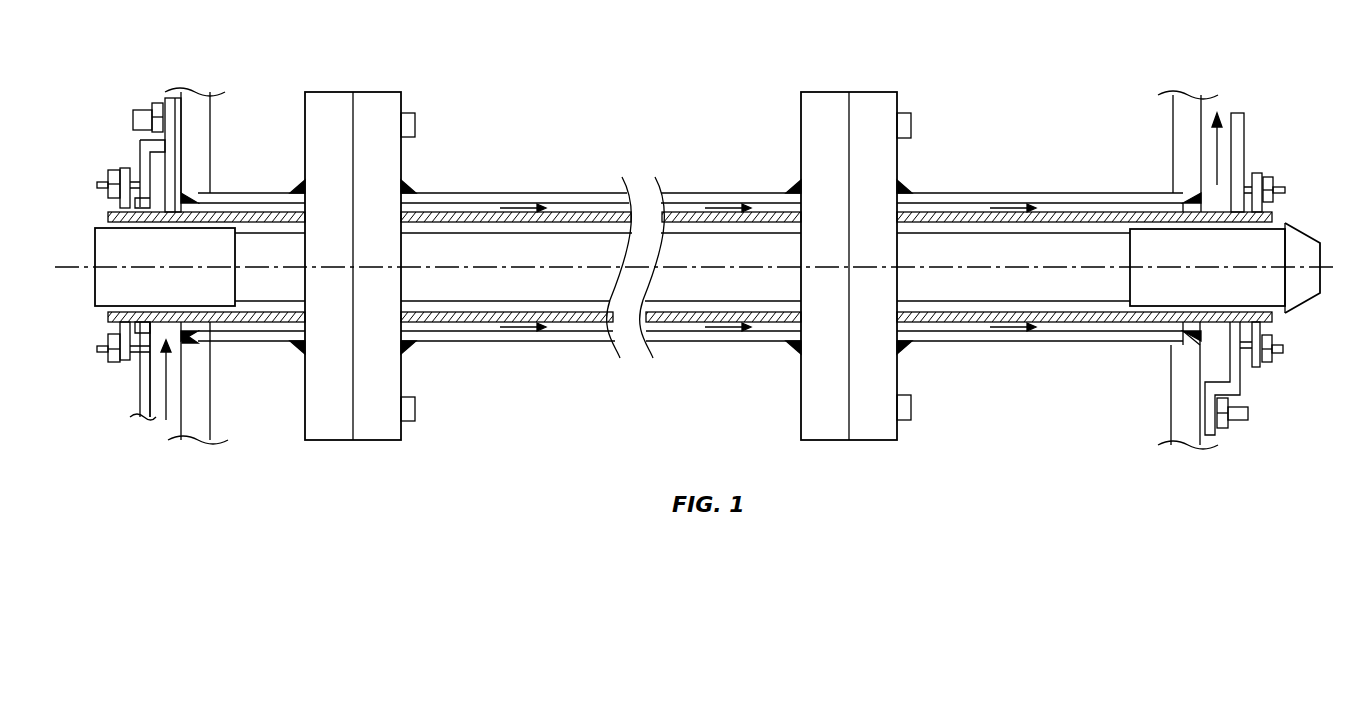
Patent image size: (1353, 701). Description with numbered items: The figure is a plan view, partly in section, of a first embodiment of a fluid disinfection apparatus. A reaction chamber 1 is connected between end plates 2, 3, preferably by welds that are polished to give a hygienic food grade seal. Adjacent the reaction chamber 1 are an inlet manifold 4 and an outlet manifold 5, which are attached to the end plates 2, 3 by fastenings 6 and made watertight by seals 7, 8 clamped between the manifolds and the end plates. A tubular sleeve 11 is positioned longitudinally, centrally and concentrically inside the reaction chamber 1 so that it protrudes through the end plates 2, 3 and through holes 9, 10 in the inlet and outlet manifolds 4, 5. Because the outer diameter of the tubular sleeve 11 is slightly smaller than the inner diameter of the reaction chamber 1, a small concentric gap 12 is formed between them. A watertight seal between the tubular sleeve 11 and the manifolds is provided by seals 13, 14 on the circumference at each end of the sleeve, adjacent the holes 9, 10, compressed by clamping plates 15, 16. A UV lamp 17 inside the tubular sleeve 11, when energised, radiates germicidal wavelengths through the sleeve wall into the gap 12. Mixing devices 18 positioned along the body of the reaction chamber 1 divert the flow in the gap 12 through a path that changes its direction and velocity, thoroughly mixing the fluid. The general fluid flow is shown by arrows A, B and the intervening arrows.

The reaction chamber 1 is at (568, 193).
The end plate 2 is at (1183, 395).
The end plate 3 is at (195, 360).
The inlet manifold 4 is at (185, 419).
The outlet manifold 5 is at (1237, 125).
The fastenings 6 is at (142, 113).
The seal 7 is at (1198, 423).
The seal 8 is at (183, 125).
The hole 9 is at (160, 205).
The hole 10 is at (1243, 205).
The tubular sleeve 11 is at (502, 315).
The concentric gap 12 is at (693, 325).
The seal 13 is at (1232, 330).
The seal 14 is at (158, 319).
The clamping plate 15 is at (143, 380).
The clamping plate 16 is at (1253, 367).
The UV lamp 17 is at (703, 248).
The mixing device 18 is at (375, 107).
The arrow A is at (165, 390).
The arrow B is at (1215, 150).